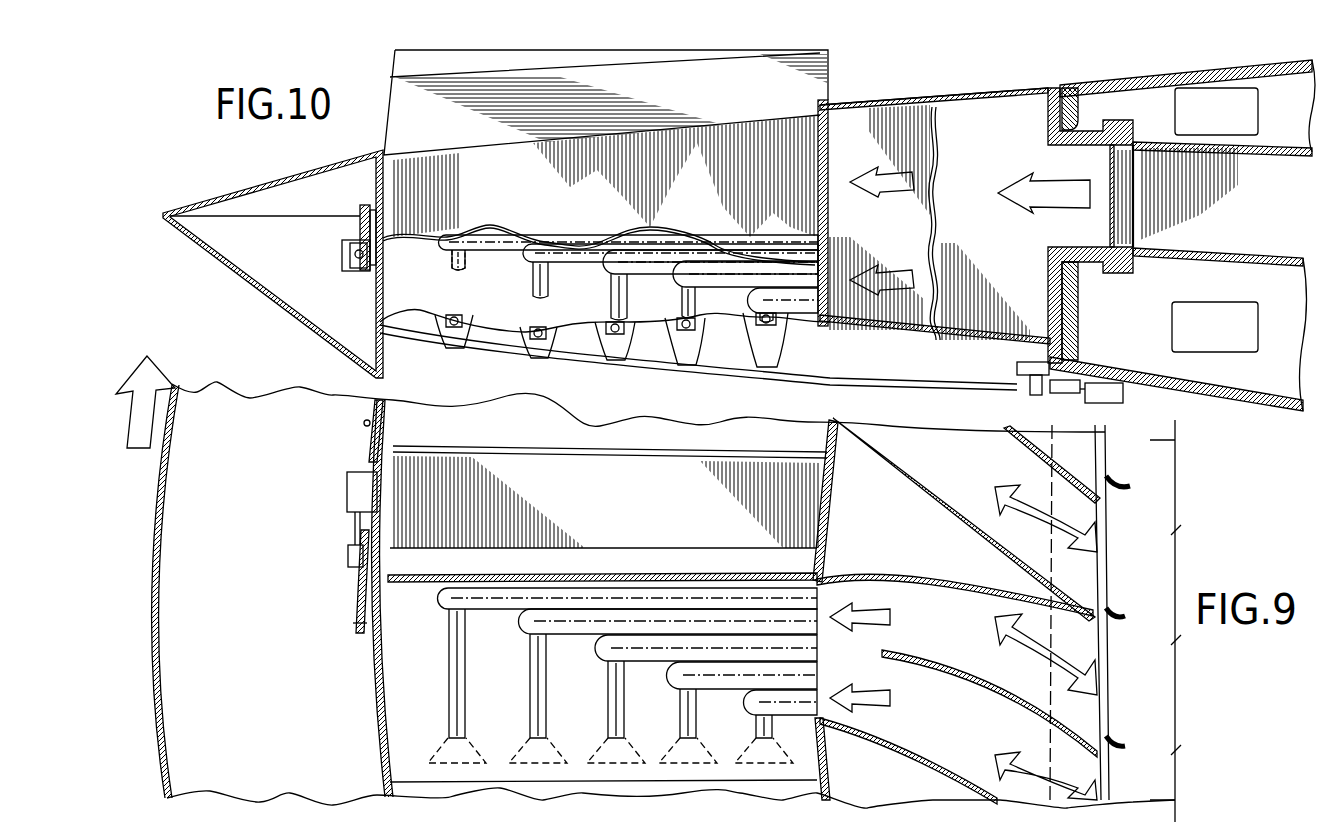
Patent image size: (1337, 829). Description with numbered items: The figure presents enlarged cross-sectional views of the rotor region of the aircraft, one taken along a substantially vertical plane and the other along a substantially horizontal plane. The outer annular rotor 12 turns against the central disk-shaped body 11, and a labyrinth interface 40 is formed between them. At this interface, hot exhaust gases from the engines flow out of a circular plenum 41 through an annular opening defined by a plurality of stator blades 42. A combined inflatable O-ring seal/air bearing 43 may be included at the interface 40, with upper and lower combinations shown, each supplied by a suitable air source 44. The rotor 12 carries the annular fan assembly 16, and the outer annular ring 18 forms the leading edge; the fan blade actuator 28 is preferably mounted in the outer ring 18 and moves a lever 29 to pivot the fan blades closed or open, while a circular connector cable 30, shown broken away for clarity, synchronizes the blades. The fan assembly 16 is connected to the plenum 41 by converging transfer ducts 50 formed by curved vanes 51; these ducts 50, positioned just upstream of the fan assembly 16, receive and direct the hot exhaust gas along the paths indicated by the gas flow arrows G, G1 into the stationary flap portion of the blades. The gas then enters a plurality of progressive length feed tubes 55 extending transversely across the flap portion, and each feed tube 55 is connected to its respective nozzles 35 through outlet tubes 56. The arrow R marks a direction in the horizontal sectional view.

In FIG. 10, the central disk-shaped body 11 is at (1152, 80).
In FIG. 10, the outer annular rotor 12 is at (921, 96).
In FIG. 10, the annular fan assembly 16 is at (360, 95).
In FIG. 10, the outer annular ring 18 is at (220, 193).
In FIG. 10, the actuator 28 is at (342, 263).
In FIG. 9, the actuator 28 is at (357, 495).
In FIG. 10, the lever 29 is at (363, 231).
In FIG. 9, the lever 29 is at (358, 563).
In FIG. 9, the cable 30 is at (372, 440).
In FIG. 10, the nozzle 35 is at (613, 352).
In FIG. 9, the nozzle 35 is at (598, 747).
In FIG. 10, the labyrinth interface 40 is at (1058, 90).
In FIG. 10, the circular plenum 41 is at (1276, 191).
In FIG. 10, the stator blade 42 is at (1122, 177).
In FIG. 9, the stator blade 42 is at (1130, 487).
In FIG. 10, the inflatable O-ring seal/air bearing 43 is at (1082, 128).
In FIG. 10, the air source 44 is at (1258, 108).
In FIG. 9, the converging transfer duct 50 is at (1011, 670).
In FIG. 10, the curved vane 51 is at (934, 79).
In FIG. 9, the curved vane 51 is at (868, 573).
In FIG. 10, the feed tube 55 is at (674, 277).
In FIG. 9, the feed tube 55 is at (507, 645).
In FIG. 10, the outlet tube 56 is at (467, 258).
In FIG. 9, the outlet tube 56 is at (540, 690).
In FIG. 10, the gas flow arrow G is at (1024, 203).
In FIG. 9, the gas flow arrow G is at (1073, 528).
In FIG. 10, the gas flow arrow G1 is at (892, 277).
In FIG. 9, the gas flow arrow G1 is at (890, 615).
In FIG. 9, the radial direction R is at (146, 373).